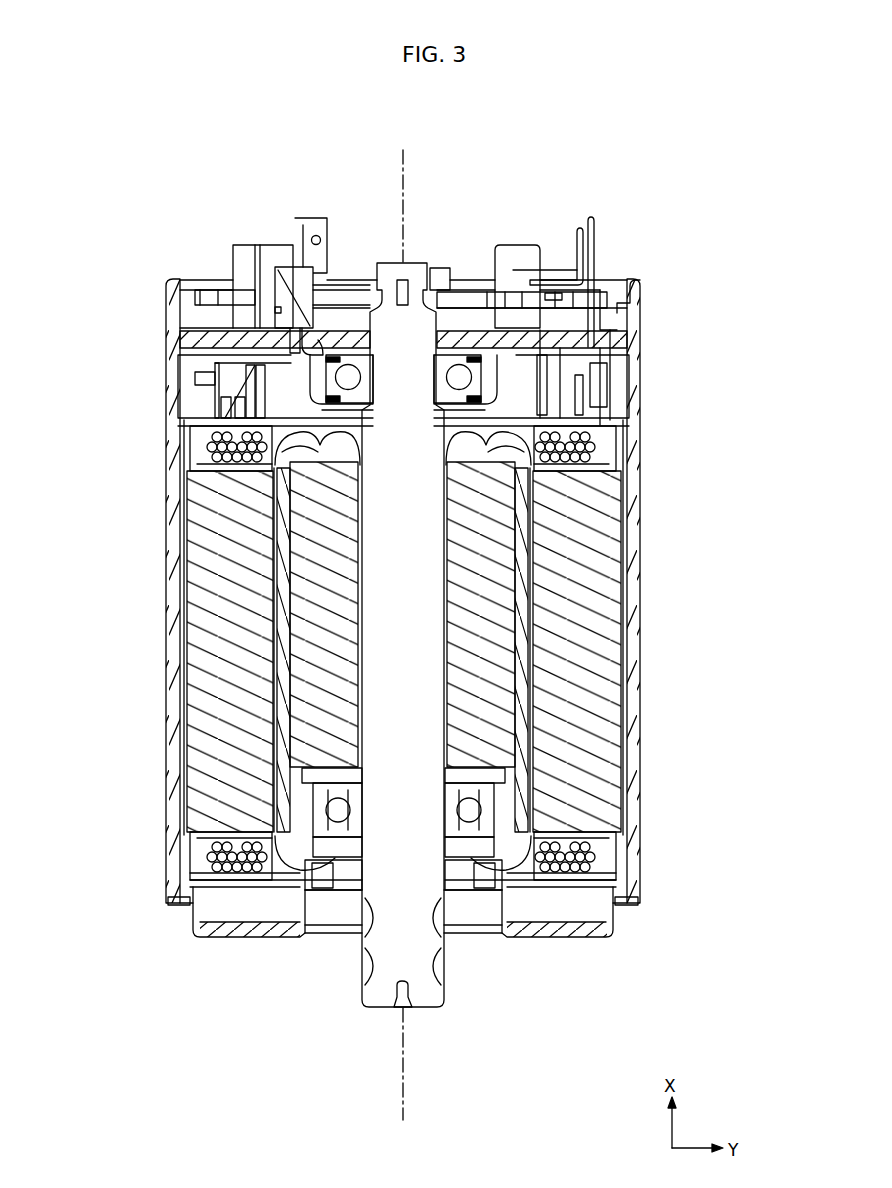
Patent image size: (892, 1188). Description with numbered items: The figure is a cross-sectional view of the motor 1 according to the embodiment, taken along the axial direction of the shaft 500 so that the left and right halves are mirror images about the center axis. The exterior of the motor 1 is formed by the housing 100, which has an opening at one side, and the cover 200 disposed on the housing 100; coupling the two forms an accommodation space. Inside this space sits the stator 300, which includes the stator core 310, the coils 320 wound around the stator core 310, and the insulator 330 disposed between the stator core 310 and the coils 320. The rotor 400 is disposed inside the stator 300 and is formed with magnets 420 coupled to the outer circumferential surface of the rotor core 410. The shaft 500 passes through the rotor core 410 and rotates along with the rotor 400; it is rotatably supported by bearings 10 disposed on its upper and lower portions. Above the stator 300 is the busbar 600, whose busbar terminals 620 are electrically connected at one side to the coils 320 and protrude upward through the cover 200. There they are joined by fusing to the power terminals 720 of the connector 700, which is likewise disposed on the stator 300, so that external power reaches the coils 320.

The motor 1 is at (101, 153).
The bearings 10 is at (328, 375).
The housing 100 is at (636, 768).
The cover 200 is at (625, 335).
The stator 300 is at (484, 650).
The stator core 310 is at (595, 520).
The coils 320 is at (607, 443).
The insulator 330 is at (603, 463).
The rotor 400 is at (522, 647).
The rotor core 410 is at (483, 607).
The magnets 420 is at (523, 660).
The shaft 500 is at (412, 950).
The busbar 600 is at (614, 407).
The busbar terminals 620 is at (596, 230).
The connector 700 is at (237, 283).
The power terminals 720 is at (580, 236).